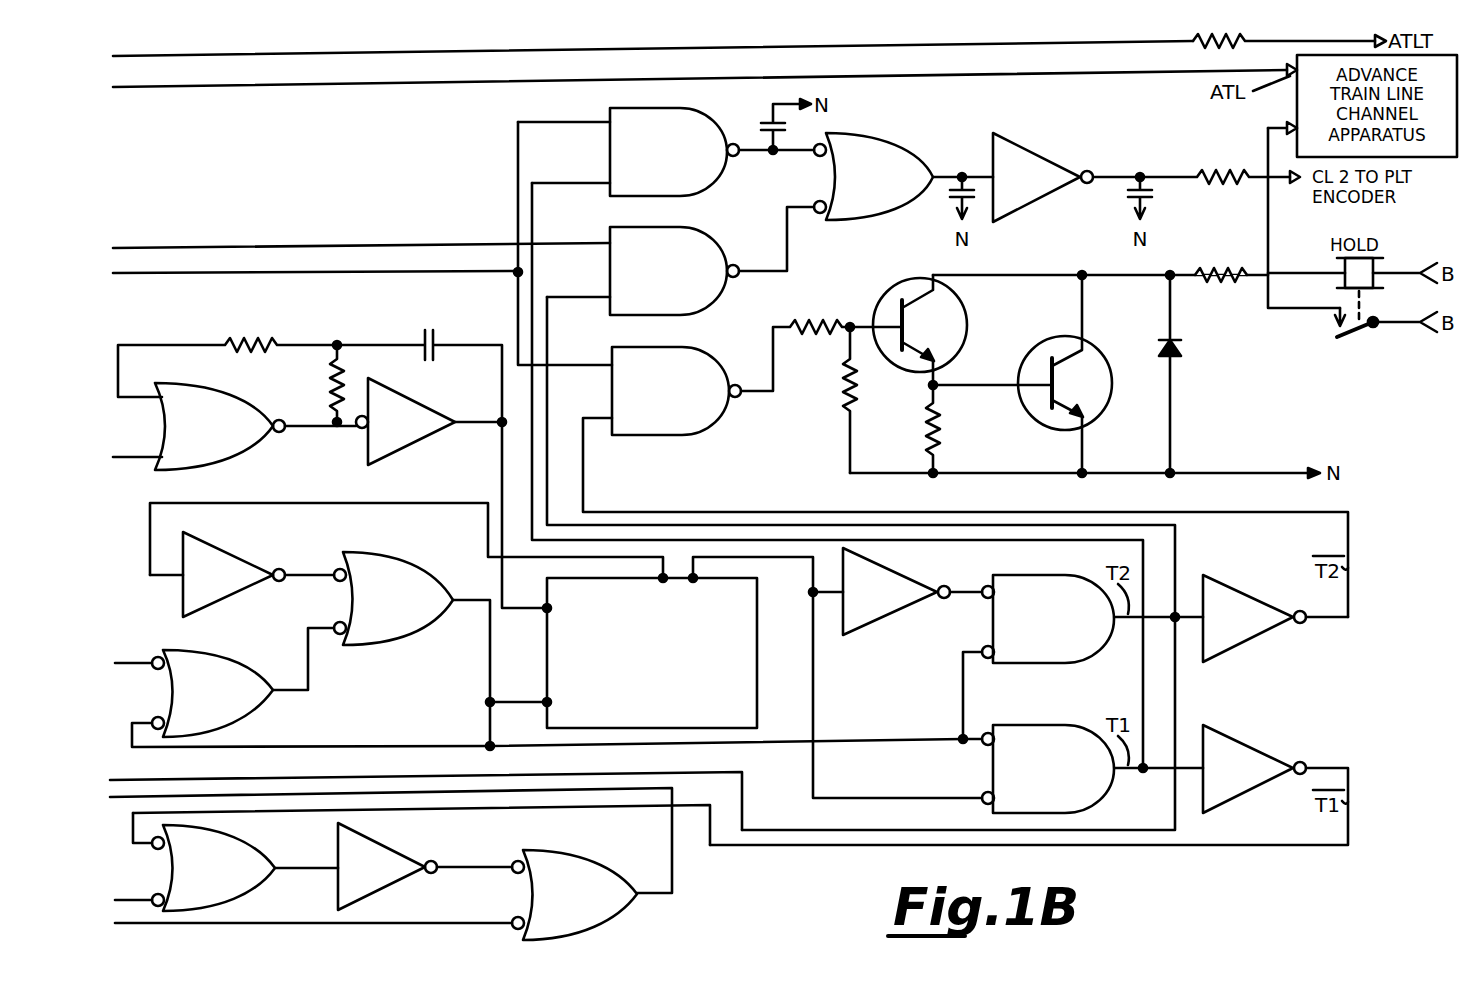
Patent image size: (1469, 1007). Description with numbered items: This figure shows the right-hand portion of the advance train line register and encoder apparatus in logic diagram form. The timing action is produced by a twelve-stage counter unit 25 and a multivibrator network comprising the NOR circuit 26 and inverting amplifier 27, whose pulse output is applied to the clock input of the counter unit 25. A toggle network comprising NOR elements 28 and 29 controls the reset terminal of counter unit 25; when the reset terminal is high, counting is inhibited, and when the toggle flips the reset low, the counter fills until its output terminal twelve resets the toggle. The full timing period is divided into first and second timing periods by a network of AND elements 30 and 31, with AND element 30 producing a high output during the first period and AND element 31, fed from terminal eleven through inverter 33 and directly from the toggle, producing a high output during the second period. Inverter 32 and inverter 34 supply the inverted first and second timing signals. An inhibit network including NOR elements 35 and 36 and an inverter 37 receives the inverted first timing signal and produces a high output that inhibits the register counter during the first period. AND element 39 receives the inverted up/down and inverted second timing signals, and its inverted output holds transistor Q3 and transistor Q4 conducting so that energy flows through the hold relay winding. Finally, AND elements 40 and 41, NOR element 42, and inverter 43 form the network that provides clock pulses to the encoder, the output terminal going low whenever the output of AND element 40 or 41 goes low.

The twelve-stage counter unit 25 is at (547, 655).
The NOR circuit 26 is at (220, 426).
The inverting amplifier 27 is at (405, 421).
The NOR element 28 is at (212, 693).
The NOR element 29 is at (393, 598).
The AND element 30 is at (1048, 769).
The AND element 31 is at (1048, 619).
The inverter 32 is at (1254, 769).
The inverter 33 is at (896, 591).
The inverter 34 is at (1254, 618).
The NOR element 35 is at (213, 868).
The NOR element 36 is at (574, 895).
The inverter 37 is at (387, 866).
The AND element 39 is at (676, 391).
The AND element 40 is at (674, 271).
The AND element 41 is at (674, 152).
The NOR element 42 is at (873, 176).
The inverter 43 is at (1043, 177).
The transistor Q3 is at (893, 296).
The transistor Q4 is at (1053, 346).